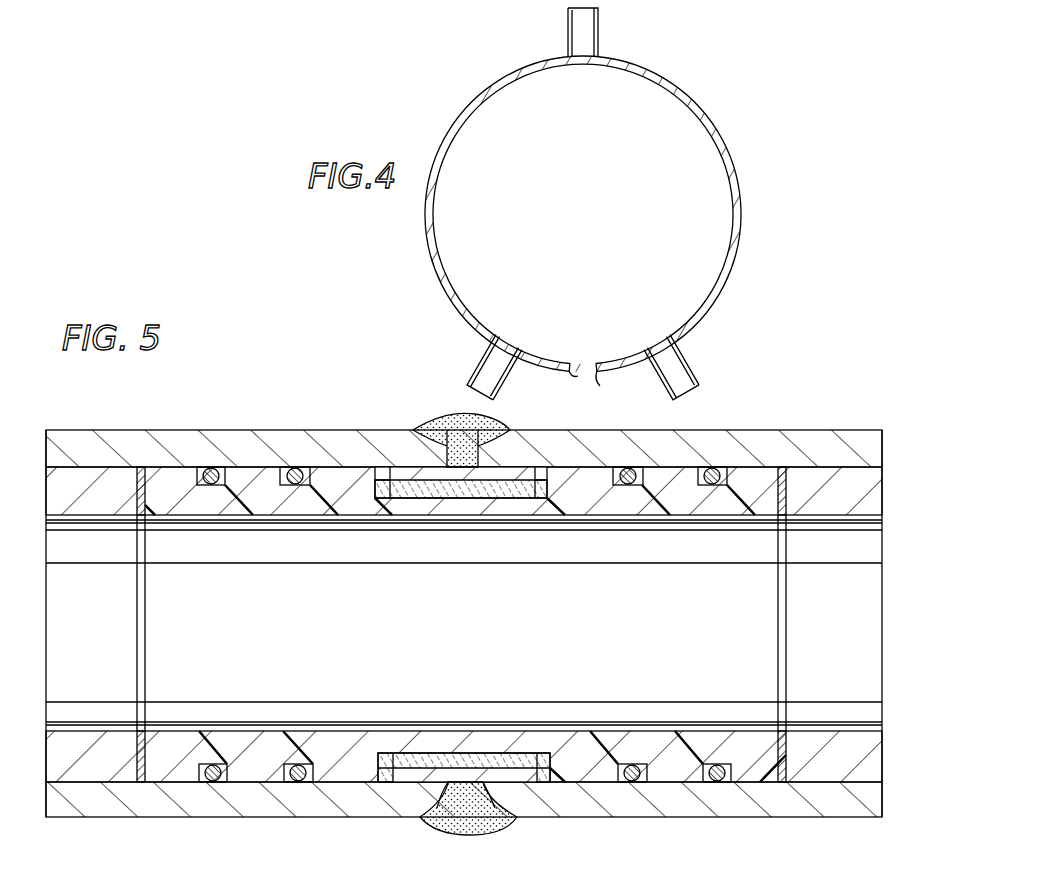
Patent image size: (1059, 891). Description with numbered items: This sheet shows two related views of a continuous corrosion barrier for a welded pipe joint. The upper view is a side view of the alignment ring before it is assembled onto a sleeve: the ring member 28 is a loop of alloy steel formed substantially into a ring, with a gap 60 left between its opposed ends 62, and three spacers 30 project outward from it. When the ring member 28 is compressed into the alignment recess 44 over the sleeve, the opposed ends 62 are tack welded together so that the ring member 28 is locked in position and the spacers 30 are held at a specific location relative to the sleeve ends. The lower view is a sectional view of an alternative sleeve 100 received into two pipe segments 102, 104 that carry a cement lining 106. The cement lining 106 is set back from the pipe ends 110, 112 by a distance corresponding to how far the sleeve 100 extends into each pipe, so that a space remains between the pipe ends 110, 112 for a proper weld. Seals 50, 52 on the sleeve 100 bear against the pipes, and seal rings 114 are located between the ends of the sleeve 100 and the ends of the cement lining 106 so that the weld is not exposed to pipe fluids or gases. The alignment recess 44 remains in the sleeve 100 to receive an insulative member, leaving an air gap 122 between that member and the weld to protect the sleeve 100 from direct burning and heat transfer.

In FIG. 4, the ring member 28 is at (740, 218).
In FIG. 4, the spacers 30 is at (568, 28).
In FIG. 4, the gap 60 is at (582, 365).
In FIG. 4, the opposed ends 62 is at (598, 374).
In FIG. 5, the pipe segment 102 is at (756, 802).
In FIG. 5, the pipe segment 104 is at (313, 803).
In FIG. 5, the sleeve 100 is at (768, 510).
In FIG. 5, the seal rings 114 is at (140, 467).
In FIG. 5, the seal 52 is at (714, 466).
In FIG. 5, the seal 50 is at (632, 486).
In FIG. 5, the alignment recess 44 is at (494, 497).
In FIG. 5, the air gap 122 is at (466, 752).
In FIG. 5, the pipe end 110 is at (430, 420).
In FIG. 5, the pipe end 112 is at (497, 425).
In FIG. 5, the cement lining 106 is at (105, 770).